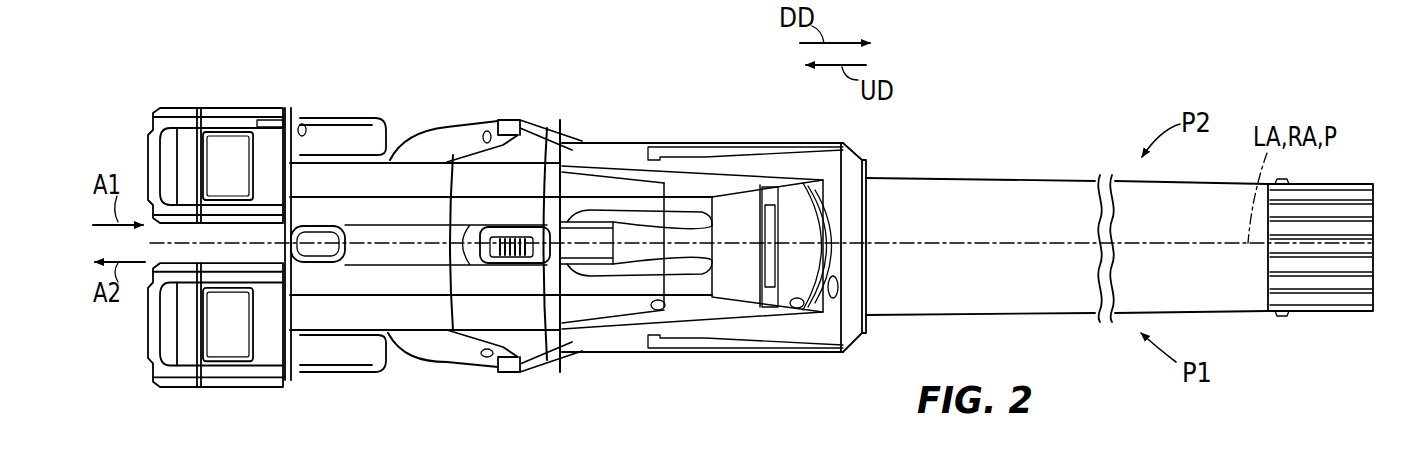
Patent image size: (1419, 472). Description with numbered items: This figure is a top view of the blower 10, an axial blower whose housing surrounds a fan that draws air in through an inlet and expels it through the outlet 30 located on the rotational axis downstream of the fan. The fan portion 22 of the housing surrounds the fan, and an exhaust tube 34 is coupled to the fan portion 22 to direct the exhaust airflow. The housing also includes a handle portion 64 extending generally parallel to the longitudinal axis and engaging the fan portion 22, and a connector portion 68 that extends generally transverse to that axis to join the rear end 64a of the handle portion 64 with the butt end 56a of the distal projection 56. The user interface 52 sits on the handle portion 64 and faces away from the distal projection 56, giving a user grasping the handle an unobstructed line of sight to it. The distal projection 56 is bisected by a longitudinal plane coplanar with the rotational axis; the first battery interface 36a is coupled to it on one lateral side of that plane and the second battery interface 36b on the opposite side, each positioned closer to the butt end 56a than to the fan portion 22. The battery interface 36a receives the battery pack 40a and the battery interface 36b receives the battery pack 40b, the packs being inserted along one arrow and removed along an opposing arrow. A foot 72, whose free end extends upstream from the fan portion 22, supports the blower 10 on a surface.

The blower 10 is at (1102, 90).
The fan portion 22 is at (729, 216).
The outlet 30 is at (884, 156).
The exhaust tube 34 is at (983, 183).
The battery interface 36a is at (345, 357).
The battery interface 36b is at (338, 137).
The battery pack 40a is at (170, 377).
The battery pack 40b is at (190, 115).
The user interface 52 is at (522, 230).
The distal projection 56 is at (467, 210).
The butt end 56a is at (276, 176).
The handle portion 64 is at (402, 230).
The rear end 64a is at (340, 218).
The connector portion 68 is at (312, 237).
The foot 72 is at (445, 357).